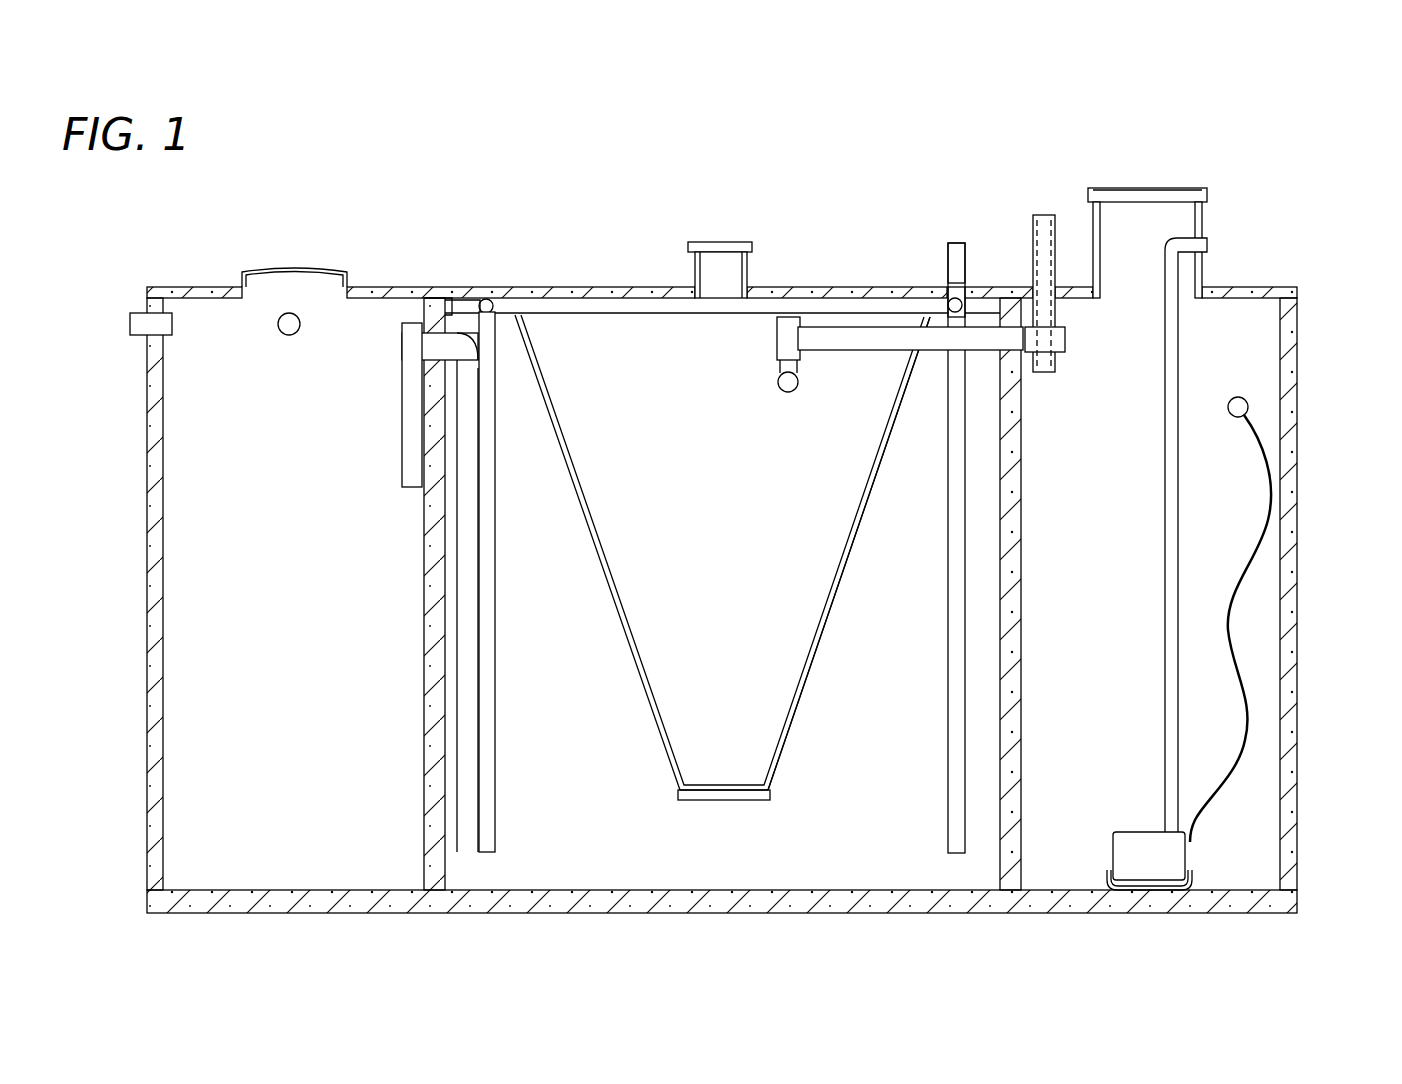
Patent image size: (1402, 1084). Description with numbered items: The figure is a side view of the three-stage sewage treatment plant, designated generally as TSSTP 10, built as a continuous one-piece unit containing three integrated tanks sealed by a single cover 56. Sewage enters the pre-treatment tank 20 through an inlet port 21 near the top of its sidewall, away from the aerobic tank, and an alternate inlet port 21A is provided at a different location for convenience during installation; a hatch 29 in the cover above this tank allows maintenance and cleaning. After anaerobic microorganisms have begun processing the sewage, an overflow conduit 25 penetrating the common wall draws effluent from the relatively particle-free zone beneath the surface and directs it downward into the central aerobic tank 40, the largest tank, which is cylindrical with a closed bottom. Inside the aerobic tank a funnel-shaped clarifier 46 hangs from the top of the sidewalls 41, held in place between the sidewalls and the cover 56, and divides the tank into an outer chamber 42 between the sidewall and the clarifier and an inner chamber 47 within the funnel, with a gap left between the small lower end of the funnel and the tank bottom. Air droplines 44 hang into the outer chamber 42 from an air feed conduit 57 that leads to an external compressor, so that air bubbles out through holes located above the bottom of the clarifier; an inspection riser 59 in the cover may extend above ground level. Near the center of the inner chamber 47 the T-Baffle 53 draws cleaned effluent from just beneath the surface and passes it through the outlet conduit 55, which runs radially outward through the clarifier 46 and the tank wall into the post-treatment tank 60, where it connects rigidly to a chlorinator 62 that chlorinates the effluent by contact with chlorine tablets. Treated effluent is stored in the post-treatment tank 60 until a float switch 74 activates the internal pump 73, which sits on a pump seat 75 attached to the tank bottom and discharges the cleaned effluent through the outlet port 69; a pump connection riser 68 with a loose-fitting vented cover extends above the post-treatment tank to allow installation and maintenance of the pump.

The TSSTP 10 is at (1316, 228).
The pre-treatment tank 20 is at (314, 866).
The inlet port 21 is at (130, 300).
The alternate inlet port 21A is at (289, 336).
The overflow conduit 25 is at (405, 348).
The hatch 29 is at (298, 266).
The aerobic tank 40 is at (740, 866).
The sidewalls 41 is at (426, 298).
The outer chamber 42 is at (633, 745).
The air droplines 44 is at (487, 852).
The clarifier 46 is at (792, 722).
The inner chamber 47 is at (622, 413).
The T-Baffle 53 is at (778, 327).
The outlet conduit 55 is at (836, 333).
The cover 56 is at (905, 288).
The air feed conduit 57 is at (957, 242).
The inspection riser 59 is at (748, 242).
The post-treatment tank 60 is at (1075, 831).
The chlorinator 62 is at (1046, 214).
The pump connection riser 68 is at (1190, 185).
The outlet port 69 is at (1210, 245).
The internal pump 73 is at (1186, 851).
The float switch 74 is at (1237, 396).
The pump seat 75 is at (1190, 880).